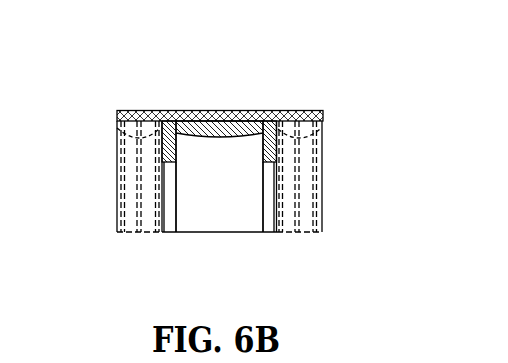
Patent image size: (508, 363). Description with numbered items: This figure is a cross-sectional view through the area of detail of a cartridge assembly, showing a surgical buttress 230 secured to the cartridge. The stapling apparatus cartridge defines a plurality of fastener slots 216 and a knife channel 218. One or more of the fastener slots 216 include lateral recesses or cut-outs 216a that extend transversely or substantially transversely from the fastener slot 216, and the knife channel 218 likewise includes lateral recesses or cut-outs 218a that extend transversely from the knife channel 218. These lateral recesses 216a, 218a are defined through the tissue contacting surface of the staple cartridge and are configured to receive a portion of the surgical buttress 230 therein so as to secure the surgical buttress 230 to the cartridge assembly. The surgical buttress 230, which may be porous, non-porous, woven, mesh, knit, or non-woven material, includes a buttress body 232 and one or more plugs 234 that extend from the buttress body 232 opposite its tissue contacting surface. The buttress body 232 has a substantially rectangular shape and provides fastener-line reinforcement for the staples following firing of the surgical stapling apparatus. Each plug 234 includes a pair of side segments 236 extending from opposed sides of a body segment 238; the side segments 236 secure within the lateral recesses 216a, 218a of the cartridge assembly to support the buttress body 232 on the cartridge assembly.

The fastener slot 216 is at (116, 227).
The lateral recess 216a is at (116, 193).
The knife channel 218 is at (216, 226).
The lateral recess 218a is at (157, 127).
The surgical buttress 230 is at (233, 108).
The buttress body 232 is at (302, 110).
The plug 234 is at (183, 128).
The side segment 236 is at (163, 153).
The body segment 238 is at (215, 138).